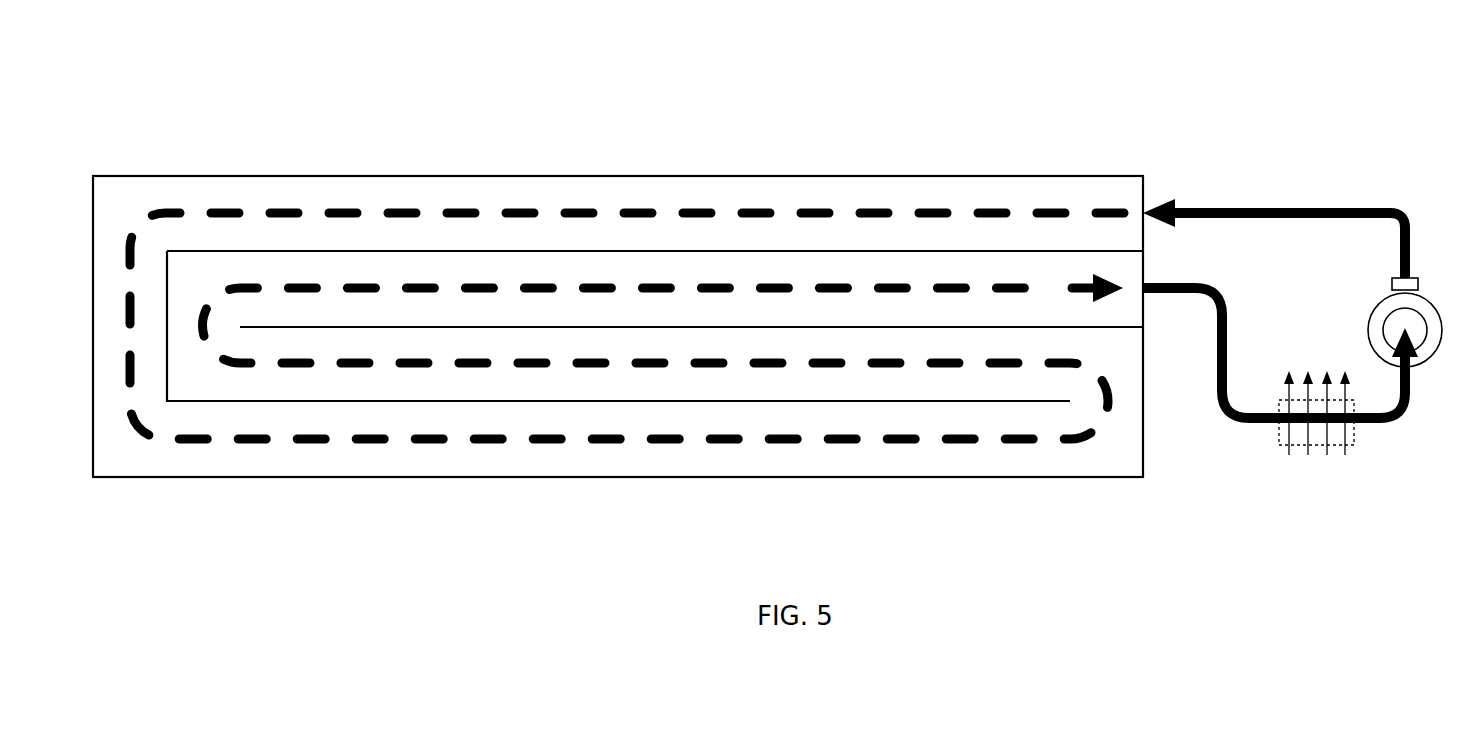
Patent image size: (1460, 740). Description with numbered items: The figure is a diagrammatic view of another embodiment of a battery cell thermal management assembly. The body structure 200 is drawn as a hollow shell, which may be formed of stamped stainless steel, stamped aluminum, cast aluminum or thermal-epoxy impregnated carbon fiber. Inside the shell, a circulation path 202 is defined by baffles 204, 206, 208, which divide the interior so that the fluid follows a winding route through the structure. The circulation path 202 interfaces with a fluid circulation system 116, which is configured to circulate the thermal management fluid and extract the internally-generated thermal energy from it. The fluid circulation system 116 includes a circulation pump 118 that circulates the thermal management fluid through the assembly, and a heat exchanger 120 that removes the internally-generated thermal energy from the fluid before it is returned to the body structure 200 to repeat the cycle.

The body structure 200 is at (417, 176).
The circulation path 202 is at (1043, 208).
The baffle 204 is at (620, 251).
The baffle 206 is at (790, 326).
The baffle 208 is at (590, 403).
The fluid circulation system 116 is at (1402, 192).
The circulation pump 118 is at (1433, 327).
The heat exchanger 120 is at (1358, 400).